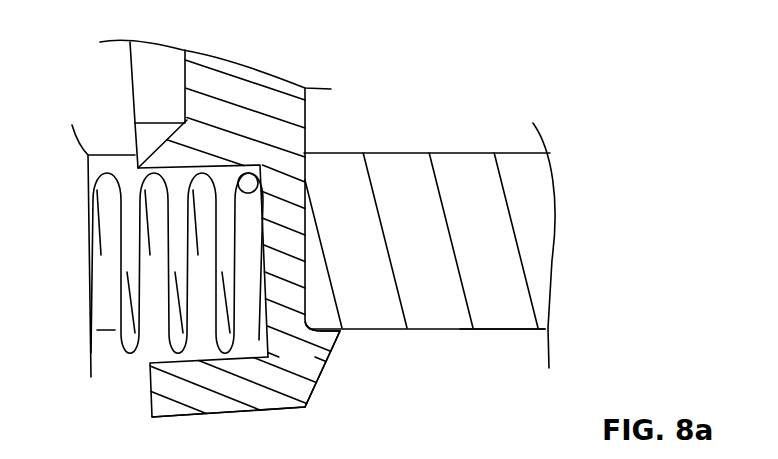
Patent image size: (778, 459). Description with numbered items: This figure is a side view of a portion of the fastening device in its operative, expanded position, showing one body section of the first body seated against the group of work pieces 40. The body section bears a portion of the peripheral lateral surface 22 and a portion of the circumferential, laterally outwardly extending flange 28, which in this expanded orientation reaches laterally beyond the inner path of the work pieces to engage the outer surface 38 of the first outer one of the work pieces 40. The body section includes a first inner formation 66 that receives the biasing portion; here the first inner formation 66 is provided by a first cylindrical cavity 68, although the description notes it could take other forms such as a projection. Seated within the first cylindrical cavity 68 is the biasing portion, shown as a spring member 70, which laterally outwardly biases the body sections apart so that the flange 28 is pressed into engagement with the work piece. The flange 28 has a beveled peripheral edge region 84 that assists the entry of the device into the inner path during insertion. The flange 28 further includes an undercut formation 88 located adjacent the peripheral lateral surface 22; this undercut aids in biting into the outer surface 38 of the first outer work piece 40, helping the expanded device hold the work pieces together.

The peripheral lateral surface 22 is at (305, 118).
The flange 28 is at (368, 361).
The outer surface 38 is at (493, 330).
The work pieces 40 is at (492, 227).
The first inner formation 66 is at (255, 382).
The first cylindrical cavity 68 is at (157, 355).
The spring member 70 is at (242, 225).
The beveled peripheral edge region 84 is at (340, 333).
The undercut formation 88 is at (310, 328).